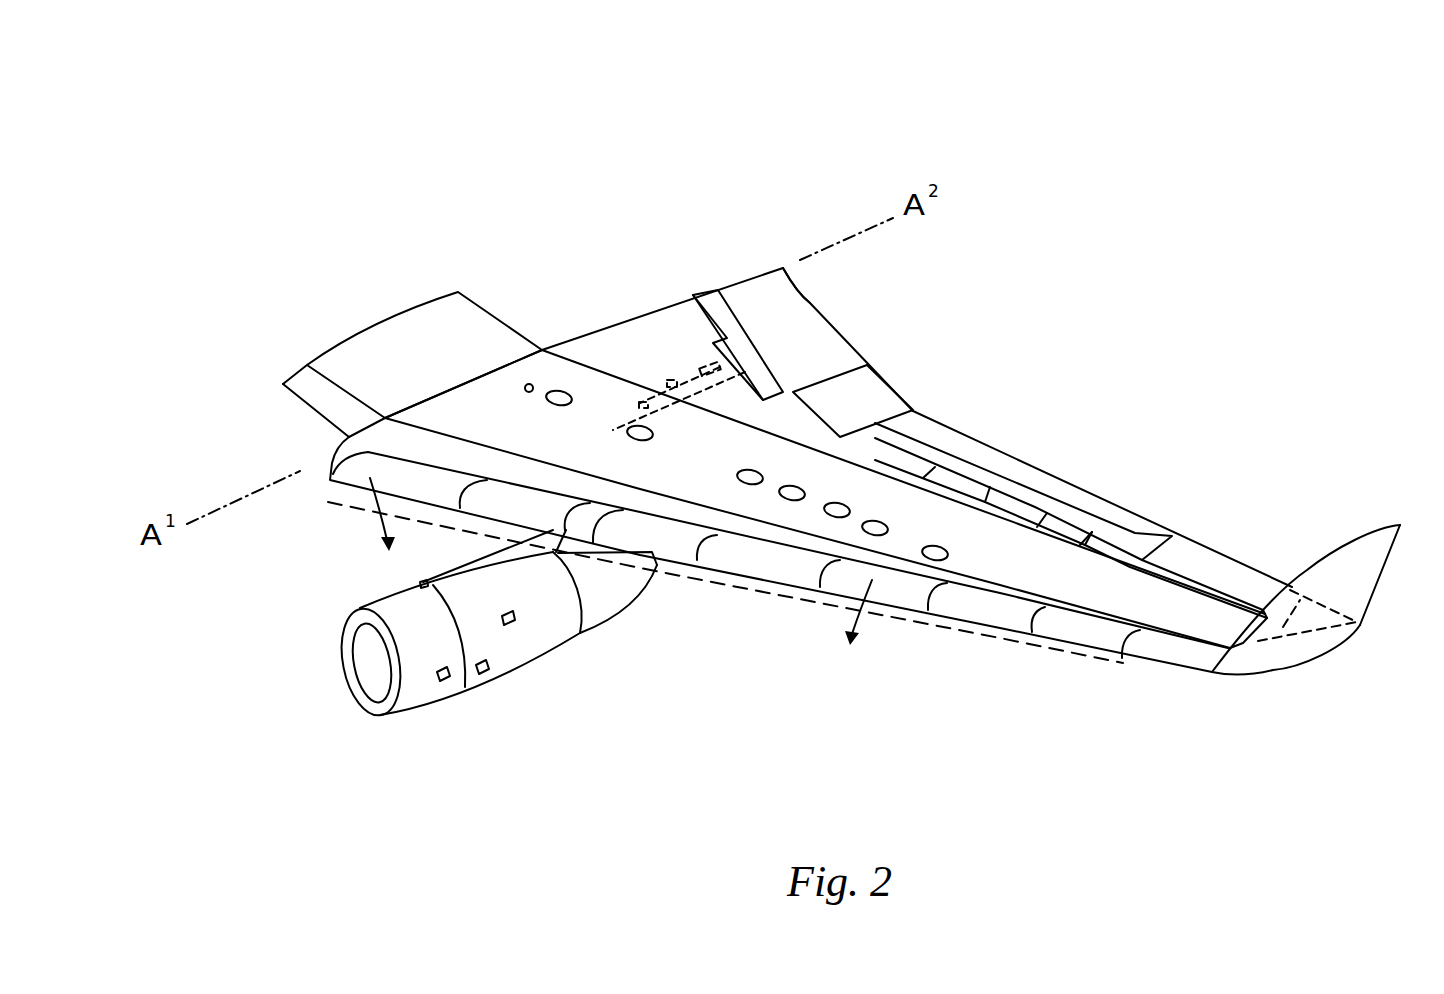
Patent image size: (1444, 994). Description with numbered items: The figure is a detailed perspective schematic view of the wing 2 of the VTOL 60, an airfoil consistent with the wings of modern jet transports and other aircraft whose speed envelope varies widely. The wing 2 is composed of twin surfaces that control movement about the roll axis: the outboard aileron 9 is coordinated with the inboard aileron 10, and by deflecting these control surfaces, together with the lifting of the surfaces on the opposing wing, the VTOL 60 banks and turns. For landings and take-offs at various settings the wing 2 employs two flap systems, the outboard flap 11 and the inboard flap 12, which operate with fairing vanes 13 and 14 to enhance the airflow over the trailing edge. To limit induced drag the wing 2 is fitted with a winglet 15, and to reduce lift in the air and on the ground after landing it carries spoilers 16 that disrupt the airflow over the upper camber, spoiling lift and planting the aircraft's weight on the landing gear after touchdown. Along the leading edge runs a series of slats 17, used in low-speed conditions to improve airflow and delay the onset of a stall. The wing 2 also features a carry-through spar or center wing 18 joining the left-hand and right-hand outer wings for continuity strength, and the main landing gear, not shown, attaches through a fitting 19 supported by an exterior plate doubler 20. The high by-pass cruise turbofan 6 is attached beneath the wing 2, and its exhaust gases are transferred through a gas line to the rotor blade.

The VTOL 60 is at (291, 188).
The wing 2 is at (1197, 620).
The high by-pass cruise turbofan 6 is at (552, 622).
The outboard aileron 9 is at (1213, 570).
The inboard aileron 10 is at (875, 393).
The outboard flap 11 is at (1040, 482).
The inboard flap 12 is at (810, 327).
The fairing vane 13 is at (912, 443).
The fairing vane 14 is at (718, 302).
The winglet 15 is at (1367, 565).
The spoilers 16 is at (728, 338).
The slats 17 is at (347, 480).
The carry-through spar or center wing 18 is at (398, 337).
The fitting 19 is at (738, 366).
The exterior plate doubler 20 is at (640, 403).